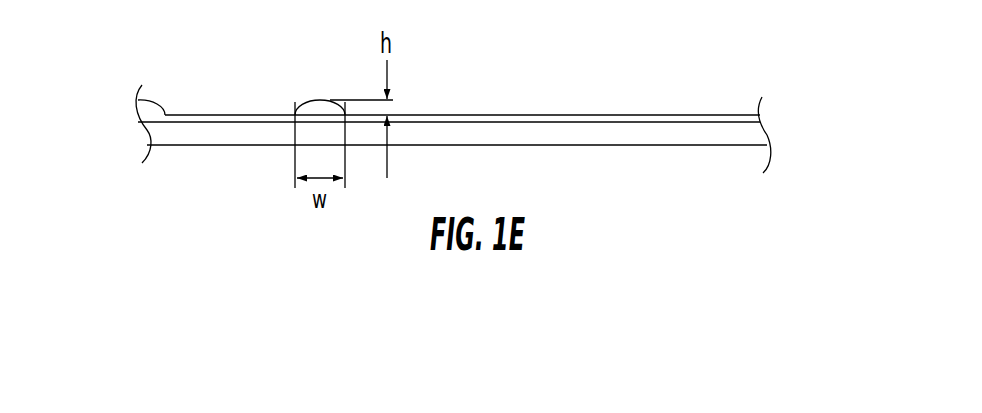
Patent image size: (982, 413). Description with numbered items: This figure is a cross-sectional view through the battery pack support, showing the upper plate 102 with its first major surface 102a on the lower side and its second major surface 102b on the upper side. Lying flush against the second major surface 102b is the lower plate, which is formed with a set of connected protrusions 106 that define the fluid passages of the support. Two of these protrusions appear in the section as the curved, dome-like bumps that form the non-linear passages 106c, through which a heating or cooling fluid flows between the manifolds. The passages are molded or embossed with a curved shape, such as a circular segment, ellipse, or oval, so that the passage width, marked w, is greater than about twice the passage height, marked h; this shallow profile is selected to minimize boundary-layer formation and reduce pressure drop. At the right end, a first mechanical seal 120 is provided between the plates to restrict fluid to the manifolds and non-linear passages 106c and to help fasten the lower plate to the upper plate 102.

The upper plate 102 is at (129, 123).
The first major surface 102a is at (225, 153).
The second major surface 102b is at (548, 111).
The protrusions 106 is at (713, 107).
The non-linear passages 106c is at (296, 109).
The first mechanical seal 120 is at (768, 118).